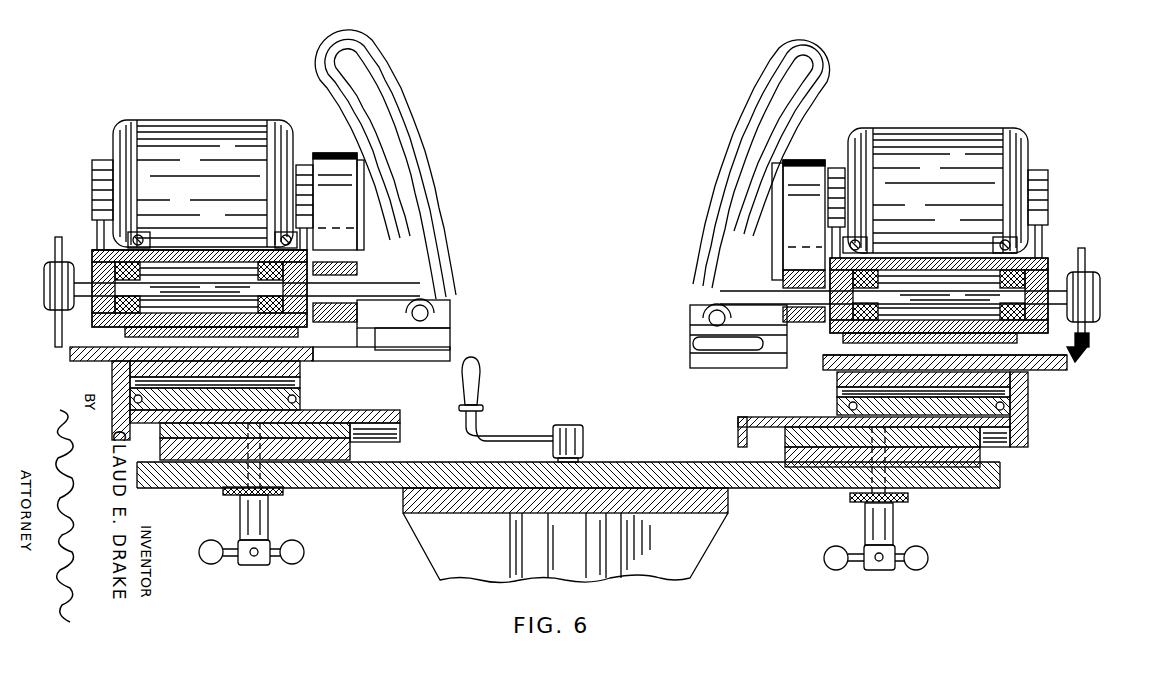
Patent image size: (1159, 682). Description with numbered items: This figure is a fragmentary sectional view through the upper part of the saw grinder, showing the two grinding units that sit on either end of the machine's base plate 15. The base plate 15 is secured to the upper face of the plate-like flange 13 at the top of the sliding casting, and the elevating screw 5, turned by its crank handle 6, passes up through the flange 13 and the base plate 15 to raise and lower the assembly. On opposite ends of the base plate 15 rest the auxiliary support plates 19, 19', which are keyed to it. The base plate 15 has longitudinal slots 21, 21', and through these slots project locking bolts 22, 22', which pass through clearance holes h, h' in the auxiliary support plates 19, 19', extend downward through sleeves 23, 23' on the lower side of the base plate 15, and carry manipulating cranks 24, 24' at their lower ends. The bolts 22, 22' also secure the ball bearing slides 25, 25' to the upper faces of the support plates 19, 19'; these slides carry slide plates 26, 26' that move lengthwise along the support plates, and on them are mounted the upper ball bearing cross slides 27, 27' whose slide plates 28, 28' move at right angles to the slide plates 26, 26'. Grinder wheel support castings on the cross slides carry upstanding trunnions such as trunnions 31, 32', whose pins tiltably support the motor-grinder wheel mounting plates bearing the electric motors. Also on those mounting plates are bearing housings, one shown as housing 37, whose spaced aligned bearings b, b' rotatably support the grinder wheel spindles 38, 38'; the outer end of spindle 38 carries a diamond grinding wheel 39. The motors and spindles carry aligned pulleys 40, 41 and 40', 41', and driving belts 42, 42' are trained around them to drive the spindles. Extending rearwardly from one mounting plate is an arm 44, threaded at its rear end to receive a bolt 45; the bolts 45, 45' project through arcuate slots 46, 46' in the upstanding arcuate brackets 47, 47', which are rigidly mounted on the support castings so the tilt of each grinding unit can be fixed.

The elevating screw 5 is at (583, 462).
The crank handle 6 is at (515, 428).
The plate-like flange 13 is at (728, 508).
The base plate 15 is at (752, 475).
The auxiliary support plate 19 is at (923, 463).
The auxiliary support plate 19' is at (281, 450).
The longitudinal slot 21 is at (876, 490).
The longitudinal slot 21' is at (271, 502).
The bolt 22 is at (930, 481).
The bolt 22' is at (312, 474).
The sleeve 23 is at (898, 524).
The sleeve 23' is at (275, 517).
The manipulating crank 24 is at (894, 566).
The manipulating crank 24' is at (275, 561).
The ball bearing slide 25 is at (932, 442).
The ball bearing slide 25' is at (301, 435).
The slide plate 26 is at (925, 409).
The slide plate 26' is at (275, 400).
The upper ball bearing cross slide 27 is at (956, 403).
The upper ball bearing cross slide 27' is at (248, 393).
The slide plate 28 is at (954, 388).
The slide plate 28' is at (242, 374).
The trunnion 31 is at (1070, 363).
The trunnion 32' is at (165, 365).
The bearing housing 37 is at (1032, 258).
The grinder wheel spindle 38 is at (1086, 275).
The grinder wheel spindle 38' is at (47, 279).
The diamond grinding wheel 39 is at (1090, 338).
The pulley 40 is at (844, 173).
The pulley 40' is at (317, 179).
The pulley 41 is at (802, 312).
The pulley 41' is at (335, 303).
The driving belt 42 is at (798, 202).
The driving belt 42' is at (338, 188).
The arm 44 is at (450, 330).
The bolt 45 is at (680, 329).
The bolt 45' is at (455, 295).
The arcuate slot 46 is at (728, 171).
The arcuate slot 46' is at (405, 174).
The arcuate bracket 47 is at (741, 163).
The arcuate bracket 47' is at (390, 163).
The bearing b is at (948, 368).
The bearing b' is at (224, 212).
The clearance hole h is at (847, 504).
The clearance hole h' is at (228, 499).